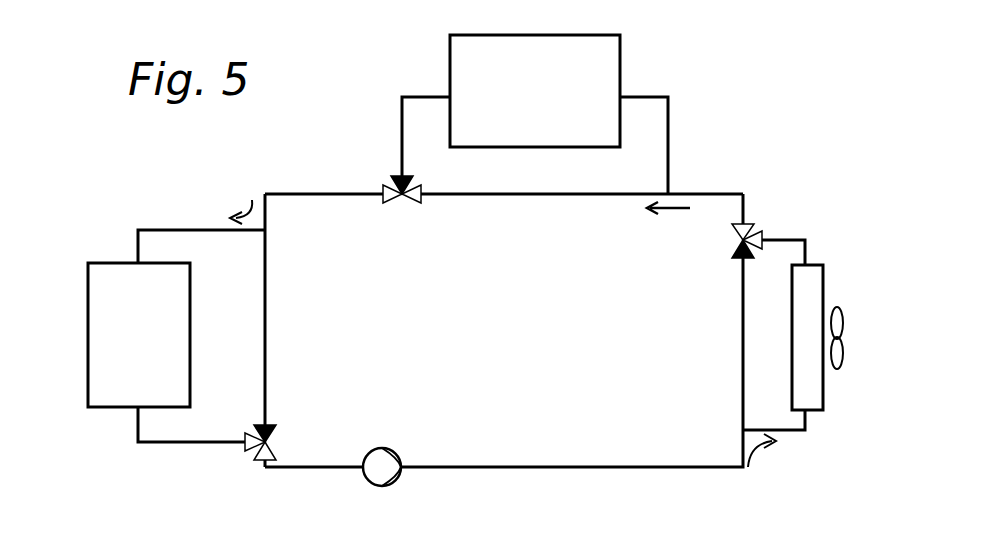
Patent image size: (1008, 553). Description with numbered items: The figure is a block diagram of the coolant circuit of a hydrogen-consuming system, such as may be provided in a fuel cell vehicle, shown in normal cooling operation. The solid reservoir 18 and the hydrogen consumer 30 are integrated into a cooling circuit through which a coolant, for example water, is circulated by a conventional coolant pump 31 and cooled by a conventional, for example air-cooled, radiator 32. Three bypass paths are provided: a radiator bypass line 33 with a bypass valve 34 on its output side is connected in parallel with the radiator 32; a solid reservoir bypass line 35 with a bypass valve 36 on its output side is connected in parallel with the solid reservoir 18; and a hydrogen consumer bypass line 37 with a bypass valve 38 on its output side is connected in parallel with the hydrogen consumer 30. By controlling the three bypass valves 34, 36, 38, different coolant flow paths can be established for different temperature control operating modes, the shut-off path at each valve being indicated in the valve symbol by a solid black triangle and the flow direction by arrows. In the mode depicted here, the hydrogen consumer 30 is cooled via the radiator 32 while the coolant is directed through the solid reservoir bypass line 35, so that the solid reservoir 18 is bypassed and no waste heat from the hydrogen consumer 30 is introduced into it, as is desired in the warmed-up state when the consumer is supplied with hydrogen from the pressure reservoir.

The solid reservoir 18 is at (622, 50).
The hydrogen consumer 30 is at (88, 370).
The coolant pump 31 is at (386, 486).
The radiator 32 is at (825, 286).
The radiator bypass line 33 is at (741, 325).
The bypass valve 34 is at (735, 242).
The solid reservoir bypass line 35 is at (523, 196).
The bypass valve 36 is at (402, 203).
The hydrogen consumer bypass line 37 is at (266, 315).
The bypass valve 38 is at (275, 440).